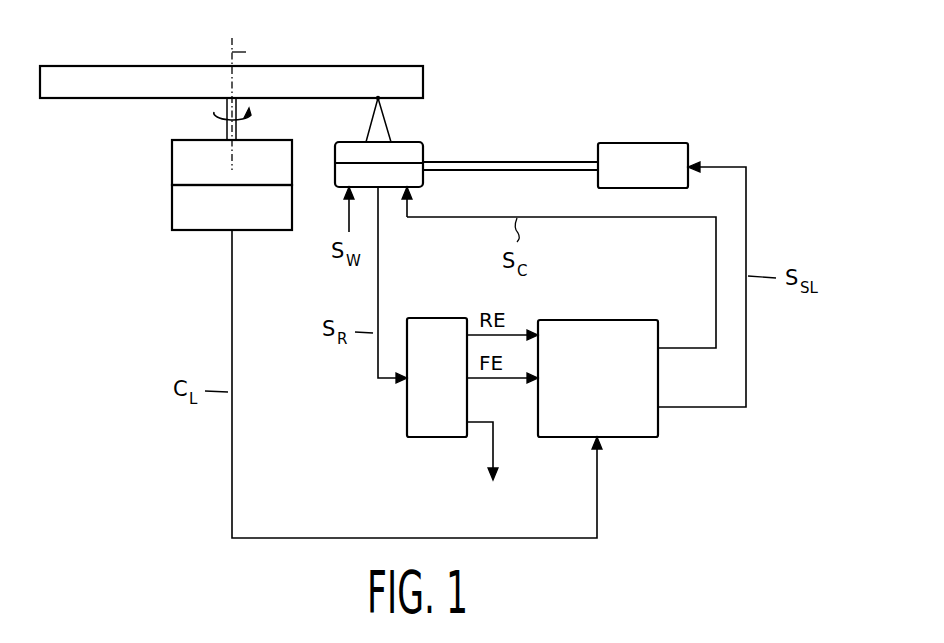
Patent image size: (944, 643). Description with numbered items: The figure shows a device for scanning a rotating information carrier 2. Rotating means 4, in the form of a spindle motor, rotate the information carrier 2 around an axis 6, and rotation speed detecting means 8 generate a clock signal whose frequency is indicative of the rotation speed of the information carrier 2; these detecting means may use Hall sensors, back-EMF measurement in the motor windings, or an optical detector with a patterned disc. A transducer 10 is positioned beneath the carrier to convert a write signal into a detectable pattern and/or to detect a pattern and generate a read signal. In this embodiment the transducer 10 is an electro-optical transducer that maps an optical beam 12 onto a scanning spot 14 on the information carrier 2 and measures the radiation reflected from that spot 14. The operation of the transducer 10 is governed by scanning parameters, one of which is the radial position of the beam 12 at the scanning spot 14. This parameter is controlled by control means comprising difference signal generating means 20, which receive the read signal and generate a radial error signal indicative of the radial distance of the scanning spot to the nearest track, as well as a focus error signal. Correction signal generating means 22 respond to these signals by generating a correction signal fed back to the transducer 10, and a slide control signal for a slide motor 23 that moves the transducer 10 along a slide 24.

The information carrier 2 is at (110, 66).
The rotating means 4 is at (176, 163).
The axis 6 is at (252, 50).
The rotation speed detecting means 8 is at (176, 208).
The transducer 10 is at (425, 150).
The optical beam 12 is at (389, 124).
The scanning spot 14 is at (379, 96).
The difference signal generating means 20 is at (430, 437).
The correction signal generating means 22 is at (636, 437).
The slide motor 23 is at (639, 143).
The slide 24 is at (552, 161).